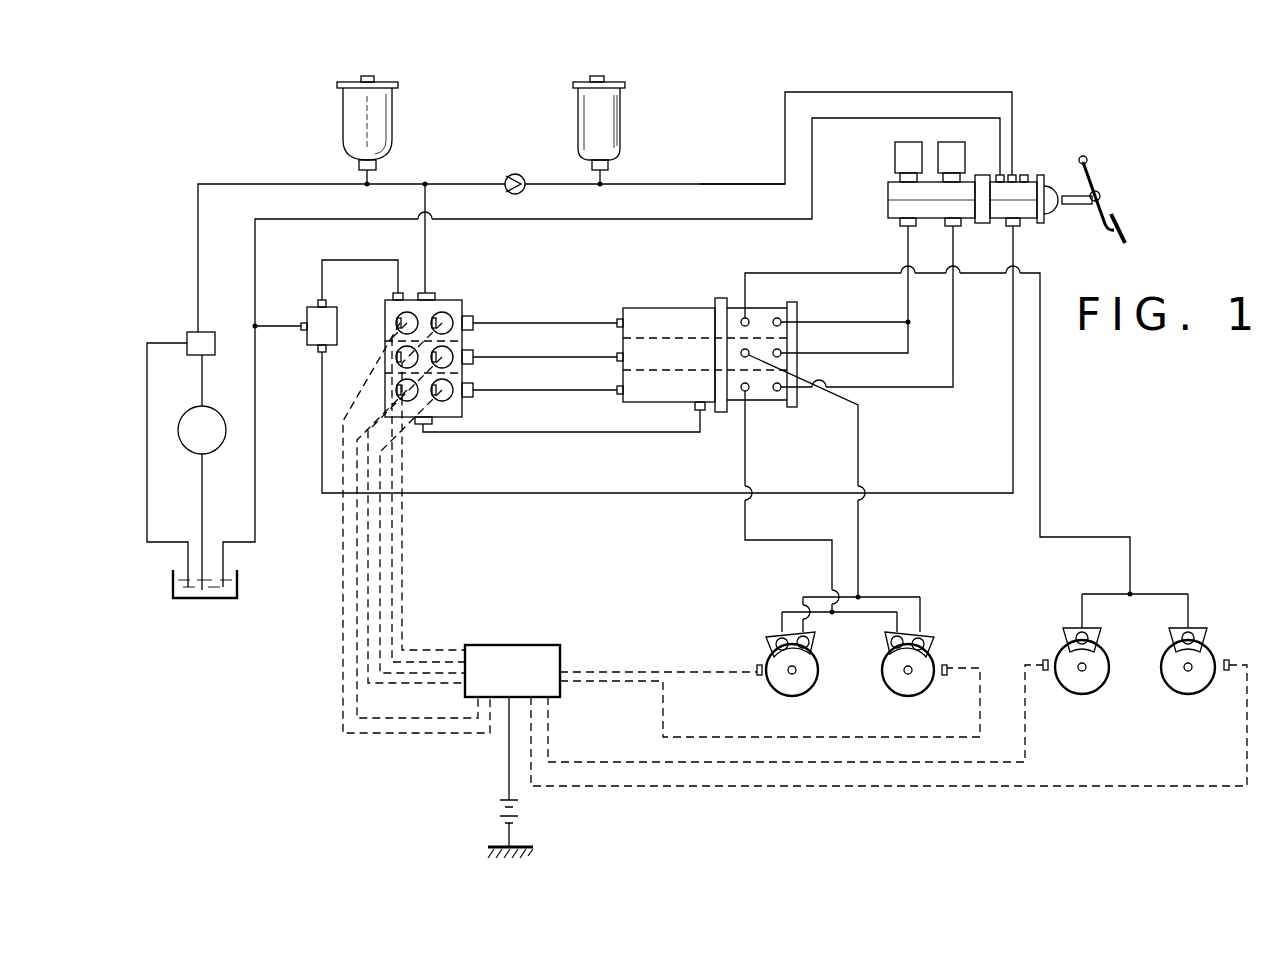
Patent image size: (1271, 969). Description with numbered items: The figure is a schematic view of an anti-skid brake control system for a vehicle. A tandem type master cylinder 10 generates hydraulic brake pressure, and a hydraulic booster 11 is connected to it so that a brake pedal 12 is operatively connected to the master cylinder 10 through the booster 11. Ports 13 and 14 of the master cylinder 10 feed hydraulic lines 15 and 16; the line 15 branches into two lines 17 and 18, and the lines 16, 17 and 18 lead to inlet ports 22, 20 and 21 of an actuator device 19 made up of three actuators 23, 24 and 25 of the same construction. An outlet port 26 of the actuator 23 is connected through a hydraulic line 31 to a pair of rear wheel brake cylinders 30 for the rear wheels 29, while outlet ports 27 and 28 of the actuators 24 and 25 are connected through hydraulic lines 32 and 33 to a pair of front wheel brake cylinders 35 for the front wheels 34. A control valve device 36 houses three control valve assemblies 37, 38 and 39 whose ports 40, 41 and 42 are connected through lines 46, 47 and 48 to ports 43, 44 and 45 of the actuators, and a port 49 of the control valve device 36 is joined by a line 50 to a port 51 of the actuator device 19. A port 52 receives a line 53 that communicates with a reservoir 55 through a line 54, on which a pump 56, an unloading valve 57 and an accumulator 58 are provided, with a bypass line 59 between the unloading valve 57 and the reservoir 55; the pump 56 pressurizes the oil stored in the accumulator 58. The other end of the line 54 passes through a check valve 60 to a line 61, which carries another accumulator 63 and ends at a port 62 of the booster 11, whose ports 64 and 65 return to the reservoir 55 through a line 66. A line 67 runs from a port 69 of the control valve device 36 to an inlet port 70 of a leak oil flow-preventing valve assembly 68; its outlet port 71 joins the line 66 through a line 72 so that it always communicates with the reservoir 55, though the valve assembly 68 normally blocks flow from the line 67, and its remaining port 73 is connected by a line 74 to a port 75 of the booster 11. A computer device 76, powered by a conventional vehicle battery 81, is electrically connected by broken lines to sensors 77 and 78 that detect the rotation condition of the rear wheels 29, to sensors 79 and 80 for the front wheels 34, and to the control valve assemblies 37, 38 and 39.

The master cylinder 10 is at (888, 198).
The hydraulic booster 11 is at (1025, 223).
The brake pedal 12 is at (1120, 216).
The port 13 is at (904, 226).
The port 14 is at (951, 226).
The hydraulic line 15 is at (953, 292).
The hydraulic line 16 is at (917, 387).
The line 17 is at (865, 322).
The line 18 is at (865, 353).
The actuator device 19 is at (687, 344).
The inlet port 20 is at (753, 351).
The inlet port 21 is at (781, 353).
The inlet port 22 is at (777, 391).
The actuator 23 is at (641, 316).
The actuator 24 is at (623, 370).
The actuator 25 is at (660, 402).
The outlet port 26 is at (743, 318).
The outlet port 27 is at (741, 353).
The outlet port 28 is at (741, 387).
The rear wheels 29 is at (1110, 676).
The rear wheel brake cylinders 30 is at (1103, 635).
The hydraulic line 31 is at (1040, 403).
The hydraulic line 32 is at (859, 515).
The hydraulic line 33 is at (746, 515).
The front wheels 34 is at (819, 680).
The front wheel brake cylinders 35 is at (817, 635).
The control valve device 36 is at (407, 336).
The control valve assembly 37 is at (385, 320).
The control valve assembly 38 is at (385, 357).
The control valve assembly 39 is at (385, 390).
The port 40 is at (474, 318).
The port 41 is at (474, 354).
The port 42 is at (474, 388).
The port 43 is at (617, 321).
The port 44 is at (617, 356).
The port 45 is at (617, 392).
The line 46 is at (540, 323).
The line 47 is at (540, 357).
The line 48 is at (540, 390).
The port 49 is at (423, 425).
The line 50 is at (535, 432).
The port 51 is at (703, 411).
The port 52 is at (431, 293).
The line 53 is at (426, 235).
The line 54 is at (262, 184).
The reservoir 55 is at (220, 598).
The pump 56 is at (218, 448).
The unloading valve 57 is at (198, 332).
The accumulator 58 is at (393, 124).
The bypass line 59 is at (147, 482).
The check valve 60 is at (515, 174).
The line 61 is at (736, 184).
The port 62 is at (1014, 175).
The accumulator 63 is at (621, 122).
The port 64 is at (999, 175).
The port 65 is at (1028, 176).
The line 66 is at (256, 503).
The line 67 is at (340, 260).
The leak oil flow-preventing valve assembly 68 is at (337, 328).
The port 69 is at (396, 293).
The inlet port 70 is at (320, 300).
The outlet port 71 is at (304, 322).
The line 72 is at (278, 327).
The port 73 is at (320, 352).
The line 74 is at (583, 493).
The port 75 is at (1010, 226).
The computer device 76 is at (515, 645).
The sensor 77 is at (1227, 671).
The sensor 78 is at (1045, 671).
The sensor 79 is at (947, 673).
The sensor 80 is at (758, 676).
The vehicle battery 81 is at (500, 809).